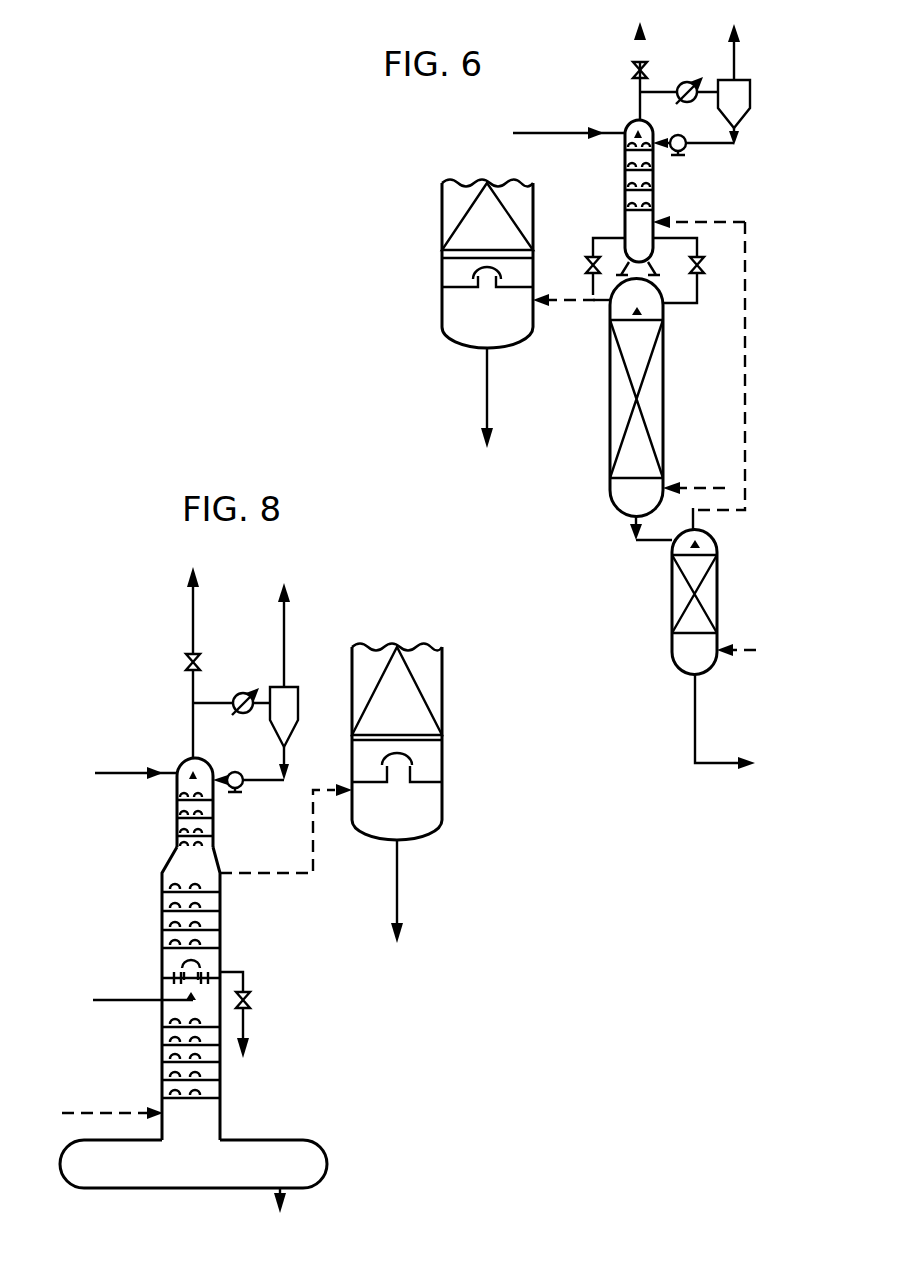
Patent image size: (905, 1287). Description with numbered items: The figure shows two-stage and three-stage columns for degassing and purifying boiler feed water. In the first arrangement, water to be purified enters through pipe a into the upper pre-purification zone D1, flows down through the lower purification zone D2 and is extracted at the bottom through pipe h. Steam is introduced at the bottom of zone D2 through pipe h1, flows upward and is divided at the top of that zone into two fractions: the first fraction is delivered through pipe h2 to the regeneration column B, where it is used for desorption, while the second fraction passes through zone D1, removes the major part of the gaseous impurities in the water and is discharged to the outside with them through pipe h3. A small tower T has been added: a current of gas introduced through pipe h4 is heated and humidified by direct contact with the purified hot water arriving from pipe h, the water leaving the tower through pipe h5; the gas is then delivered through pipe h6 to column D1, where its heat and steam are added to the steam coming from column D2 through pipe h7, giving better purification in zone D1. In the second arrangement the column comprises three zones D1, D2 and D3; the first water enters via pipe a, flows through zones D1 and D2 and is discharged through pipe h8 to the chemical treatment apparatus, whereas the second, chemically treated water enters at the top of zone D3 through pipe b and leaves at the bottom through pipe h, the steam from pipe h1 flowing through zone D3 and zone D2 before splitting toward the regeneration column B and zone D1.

In FIG. 6, the pipe a is at (553, 128).
In FIG. 8, the pipe a is at (129, 770).
In FIG. 8, the pipe b is at (117, 996).
In FIG. 6, the regeneration column B is at (487, 298).
In FIG. 8, the regeneration column B is at (397, 777).
In FIG. 6, the upper pre-purification zone D1 is at (653, 197).
In FIG. 8, the upper pre-purification zone D1 is at (212, 802).
In FIG. 6, the lower purification zone D2 is at (655, 398).
In FIG. 8, the lower purification zone D2 is at (193, 1017).
In FIG. 8, the third zone D3 is at (254, 1066).
In FIG. 6, the small tower T is at (681, 602).
In FIG. 6, the pipe h is at (642, 532).
In FIG. 8, the pipe h is at (289, 1204).
In FIG. 6, the pipe h1 is at (694, 473).
In FIG. 8, the pipe h1 is at (112, 1100).
In FIG. 6, the pipe h2 is at (564, 287).
In FIG. 8, the pipe h2 is at (286, 829).
In FIG. 6, the pipe h3 is at (626, 71).
In FIG. 8, the pipe h3 is at (206, 662).
In FIG. 6, the pipe h4 is at (736, 637).
In FIG. 6, the pipe h5 is at (725, 722).
In FIG. 6, the pipe h6 is at (719, 376).
In FIG. 6, the pipe h7 is at (669, 226).
In FIG. 8, the pipe h8 is at (248, 1015).